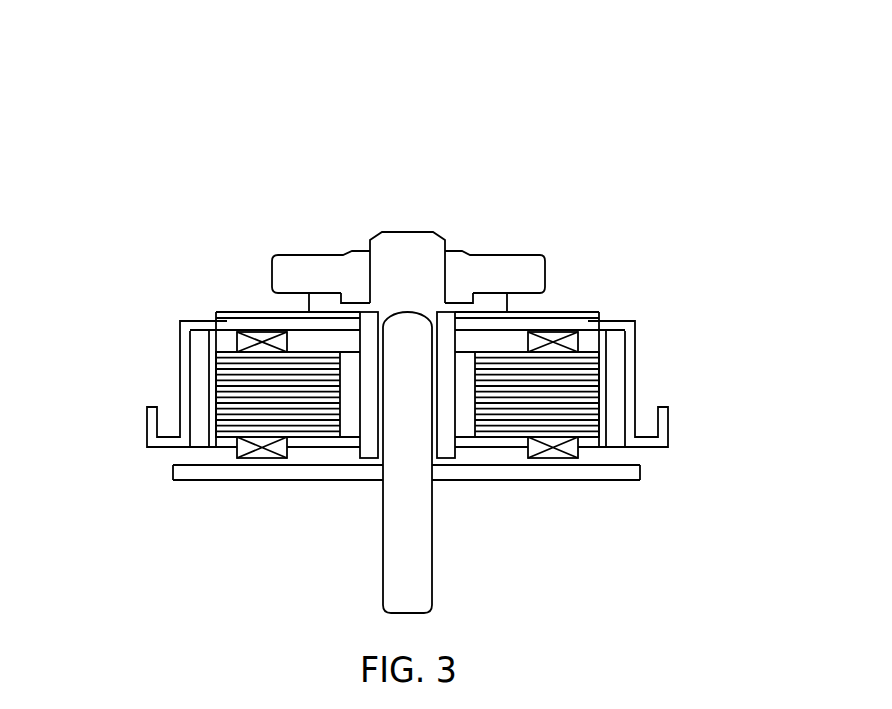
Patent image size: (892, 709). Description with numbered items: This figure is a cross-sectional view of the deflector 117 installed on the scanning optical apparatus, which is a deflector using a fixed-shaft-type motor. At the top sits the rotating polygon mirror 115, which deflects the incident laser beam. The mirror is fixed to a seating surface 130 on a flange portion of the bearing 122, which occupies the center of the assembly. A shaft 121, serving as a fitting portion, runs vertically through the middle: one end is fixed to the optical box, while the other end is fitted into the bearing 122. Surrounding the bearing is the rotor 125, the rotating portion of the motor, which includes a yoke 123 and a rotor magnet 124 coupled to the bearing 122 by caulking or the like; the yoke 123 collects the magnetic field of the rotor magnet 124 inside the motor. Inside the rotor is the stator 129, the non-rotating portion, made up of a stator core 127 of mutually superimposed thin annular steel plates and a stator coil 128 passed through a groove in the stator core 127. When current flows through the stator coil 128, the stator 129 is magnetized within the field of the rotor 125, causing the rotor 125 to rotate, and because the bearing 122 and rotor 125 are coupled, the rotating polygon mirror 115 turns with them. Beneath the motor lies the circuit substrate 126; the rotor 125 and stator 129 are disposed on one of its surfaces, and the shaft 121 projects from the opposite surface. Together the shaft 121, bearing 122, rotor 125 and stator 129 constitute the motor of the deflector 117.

The deflector 117 is at (587, 102).
The rotating polygon mirror 115 is at (519, 264).
The shaft 121 is at (419, 585).
The bearing 122 is at (447, 347).
The yoke 123 is at (631, 357).
The rotor magnet 124 is at (617, 402).
The rotor 125 is at (489, 383).
The circuit substrate 126 is at (613, 477).
The stator core 127 is at (247, 413).
The stator coil 128 is at (240, 344).
The stator 129 is at (302, 384).
The seating surface 130 is at (327, 302).